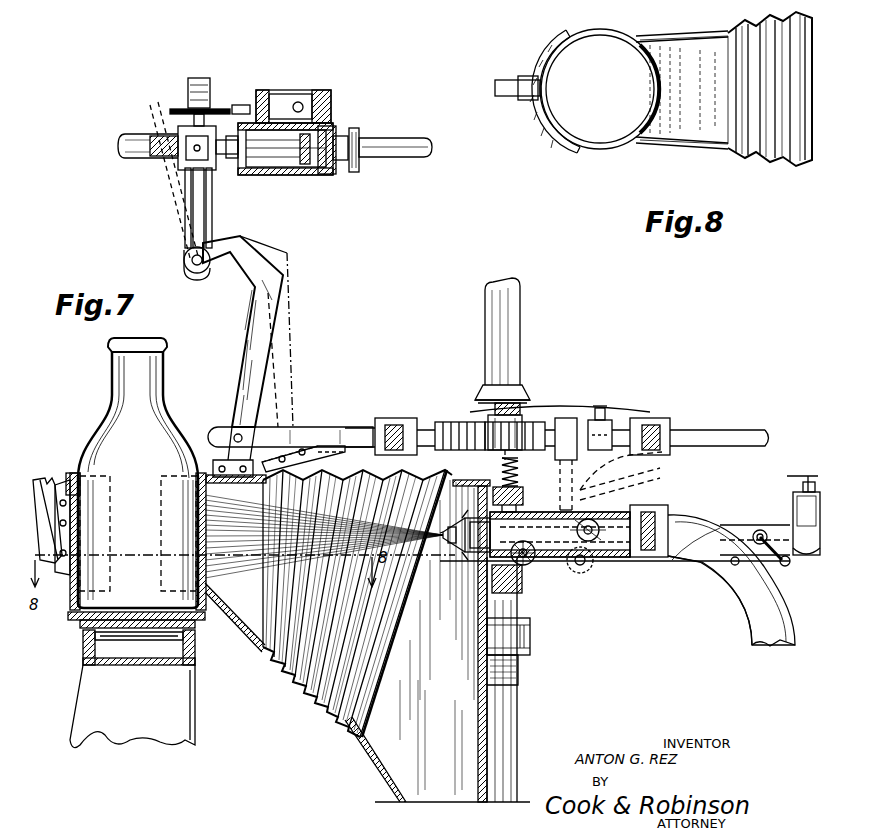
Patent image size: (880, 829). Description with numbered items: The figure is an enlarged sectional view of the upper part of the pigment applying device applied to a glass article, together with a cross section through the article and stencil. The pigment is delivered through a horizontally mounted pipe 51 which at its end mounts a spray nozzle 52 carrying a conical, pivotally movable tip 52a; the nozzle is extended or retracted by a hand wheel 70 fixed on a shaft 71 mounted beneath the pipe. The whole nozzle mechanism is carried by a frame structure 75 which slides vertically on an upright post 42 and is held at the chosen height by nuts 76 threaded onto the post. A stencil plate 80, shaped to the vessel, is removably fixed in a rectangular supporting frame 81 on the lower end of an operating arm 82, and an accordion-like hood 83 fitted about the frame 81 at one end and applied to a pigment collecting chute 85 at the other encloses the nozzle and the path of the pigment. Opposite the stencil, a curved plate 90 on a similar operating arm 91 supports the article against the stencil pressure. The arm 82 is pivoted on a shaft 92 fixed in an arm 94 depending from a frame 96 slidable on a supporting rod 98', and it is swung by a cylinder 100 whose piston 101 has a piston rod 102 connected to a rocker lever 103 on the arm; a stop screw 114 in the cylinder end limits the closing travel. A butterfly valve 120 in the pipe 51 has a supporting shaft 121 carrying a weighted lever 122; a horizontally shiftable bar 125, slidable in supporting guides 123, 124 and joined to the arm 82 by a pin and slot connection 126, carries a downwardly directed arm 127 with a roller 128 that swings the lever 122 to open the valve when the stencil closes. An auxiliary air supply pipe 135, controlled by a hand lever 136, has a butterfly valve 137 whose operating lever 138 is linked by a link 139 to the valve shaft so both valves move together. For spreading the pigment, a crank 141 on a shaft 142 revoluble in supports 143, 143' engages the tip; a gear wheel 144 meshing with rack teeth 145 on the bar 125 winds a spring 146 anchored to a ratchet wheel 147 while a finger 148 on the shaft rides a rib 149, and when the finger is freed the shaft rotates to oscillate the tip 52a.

In FIG. 7, the upright post 42 is at (505, 727).
In FIG. 7, the horizontally mounted pipe 51 is at (752, 620).
In FIG. 7, the pigment spray nozzle 52 is at (470, 556).
In FIG. 7, the conical pivotally movable tip 52a is at (452, 546).
In FIG. 7, the hand wheel 70 is at (532, 572).
In FIG. 7, the shaft 71 is at (532, 566).
In FIG. 7, the frame structure 75 is at (566, 408).
In FIG. 7, the nuts 76 is at (486, 637).
In FIG. 8, the stencil plate 80 is at (658, 101).
In FIG. 7, the stencil plate 80 is at (205, 576).
In FIG. 8, the supporting frame 81 is at (668, 148).
In FIG. 7, the supporting frame 81 is at (228, 640).
In FIG. 7, the operating arm 82 is at (270, 322).
In FIG. 8, the hood 83 is at (800, 165).
In FIG. 7, the hood 83 is at (290, 684).
In FIG. 7, the pigment collecting chute 85 is at (365, 752).
In FIG. 8, the curved plate 90 is at (550, 130).
In FIG. 7, the curved plate 90 is at (72, 470).
In FIG. 8, the operating arm 91 is at (515, 90).
In FIG. 7, the operating arm 91 is at (60, 480).
In FIG. 7, the shaft 92 is at (190, 273).
In FIG. 7, the arm 94 is at (205, 98).
In FIG. 7, the frame 96 is at (356, 136).
In FIG. 7, the supporting rod 98' is at (143, 164).
In FIG. 7, the cylinder 100 is at (322, 178).
In FIG. 7, the piston 101 is at (340, 166).
In FIG. 7, the piston rod 102 is at (287, 176).
In FIG. 7, the rocker lever 103 is at (187, 200).
In FIG. 7, the stop screw 114 is at (385, 144).
In FIG. 7, the butterfly valve 120 is at (600, 560).
In FIG. 7, the supporting shaft 121 is at (580, 573).
In FIG. 7, the weighted lever 122 is at (652, 474).
In FIG. 7, the supporting guide 123 is at (365, 458).
In FIG. 7, the supporting guide 124 is at (668, 424).
In FIG. 7, the horizontally shiftable bar 125 is at (346, 426).
In FIG. 7, the pin and slot connection 126 is at (232, 434).
In FIG. 7, the downwardly directed arm 127 is at (578, 478).
In FIG. 7, the roller 128 is at (652, 506).
In FIG. 7, the auxiliary air supply pipe 135 is at (736, 522).
In FIG. 7, the hand lever 136 is at (806, 508).
In FIG. 7, the butterfly valve 137 is at (790, 495).
In FIG. 7, the operating lever 138 is at (788, 567).
In FIG. 7, the link 139 is at (680, 566).
In FIG. 7, the crank 141 is at (523, 494).
In FIG. 7, the shaft 142 is at (488, 386).
In FIG. 7, the support 143 is at (533, 473).
In FIG. 7, the support 143' is at (532, 369).
In FIG. 7, the gear wheel 144 is at (522, 428).
In FIG. 7, the rack teeth 145 is at (396, 418).
In FIG. 7, the spring 146 is at (604, 420).
In FIG. 7, the ratchet wheel 147 is at (598, 407).
In FIG. 7, the finger 148 is at (470, 422).
In FIG. 7, the rib 149 is at (440, 424).